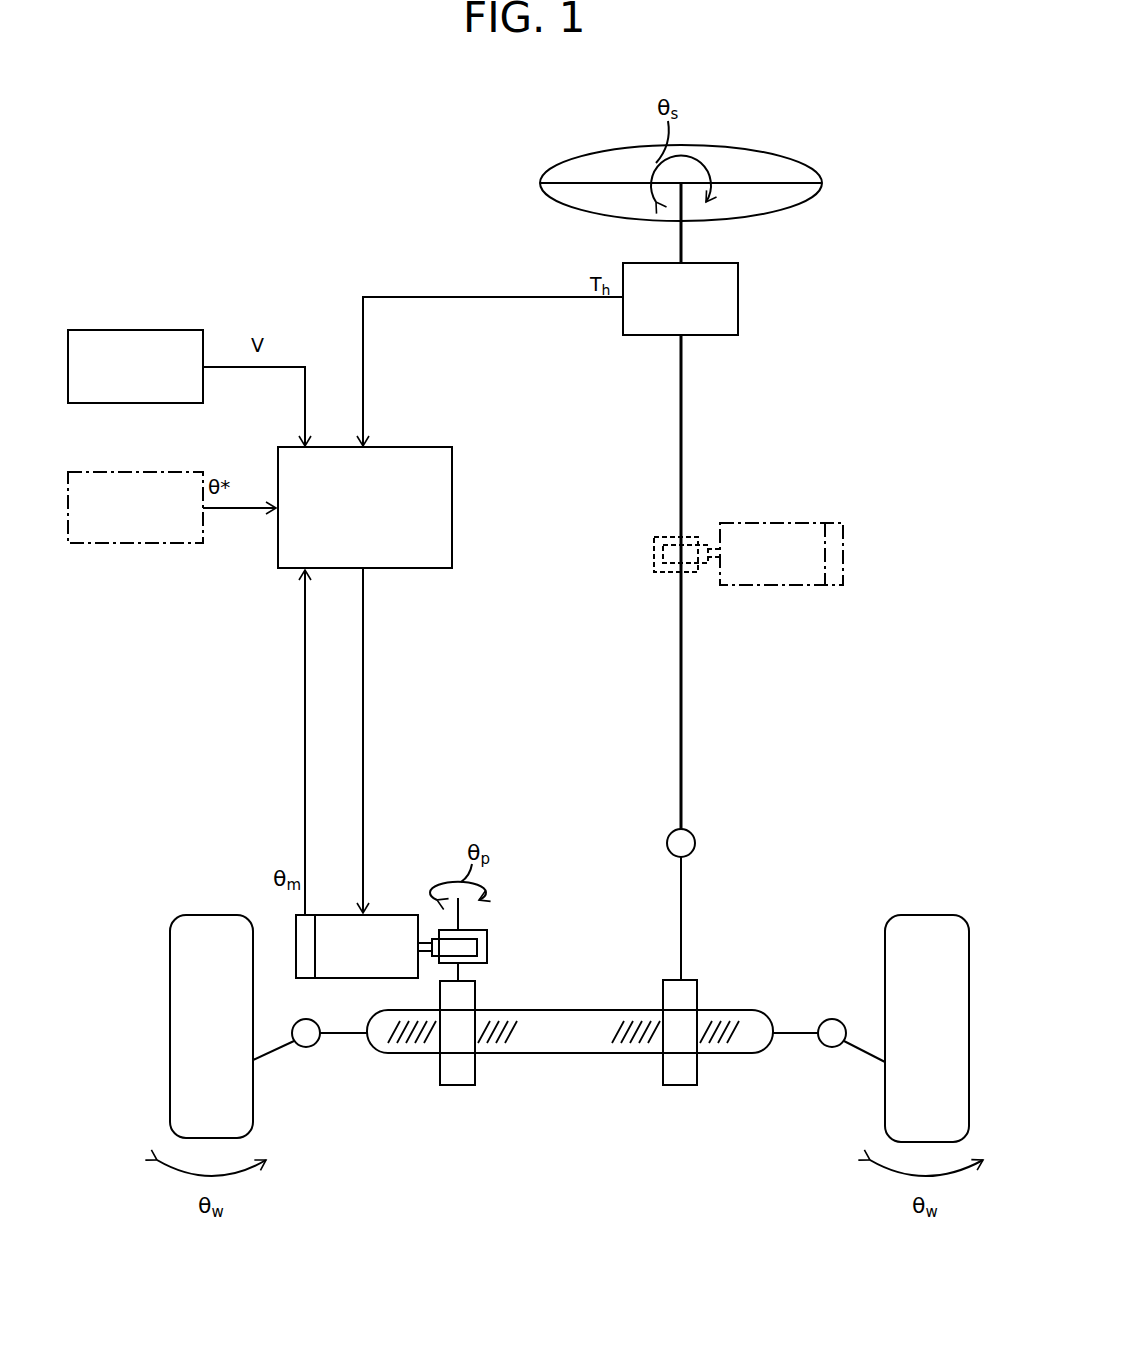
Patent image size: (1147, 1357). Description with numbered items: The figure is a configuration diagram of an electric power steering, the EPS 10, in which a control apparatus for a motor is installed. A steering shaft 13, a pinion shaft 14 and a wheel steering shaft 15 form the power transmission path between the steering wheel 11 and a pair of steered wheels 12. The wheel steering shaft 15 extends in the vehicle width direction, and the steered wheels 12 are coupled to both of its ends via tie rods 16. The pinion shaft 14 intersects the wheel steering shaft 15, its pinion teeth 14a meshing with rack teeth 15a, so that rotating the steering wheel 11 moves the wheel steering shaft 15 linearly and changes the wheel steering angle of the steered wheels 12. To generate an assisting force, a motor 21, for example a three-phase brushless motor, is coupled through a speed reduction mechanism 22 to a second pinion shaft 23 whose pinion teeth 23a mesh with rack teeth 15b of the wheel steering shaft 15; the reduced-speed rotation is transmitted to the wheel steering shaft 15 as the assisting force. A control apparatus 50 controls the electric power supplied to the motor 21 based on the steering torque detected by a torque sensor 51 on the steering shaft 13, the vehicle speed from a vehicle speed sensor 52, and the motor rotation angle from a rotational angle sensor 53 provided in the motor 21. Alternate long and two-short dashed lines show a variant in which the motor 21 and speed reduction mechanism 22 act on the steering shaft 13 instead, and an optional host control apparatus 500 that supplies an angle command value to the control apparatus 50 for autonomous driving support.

The EPS 10 is at (841, 150).
The steering wheel 11 is at (763, 150).
The steered wheels 12 is at (253, 1105).
The steering shaft 13 is at (683, 413).
The pinion shaft 14 is at (680, 947).
The pinion teeth 14a is at (683, 1085).
The wheel steering shaft 15 is at (565, 1055).
The rack teeth 15a is at (636, 1042).
The rack teeth 15b is at (485, 1055).
The tie rods 16 is at (334, 1047).
The motor 21 is at (395, 915).
The speed reduction mechanism 22 is at (492, 959).
The pinion shaft 23 is at (464, 912).
The pinion teeth 23a is at (458, 1085).
The control apparatus 50 is at (430, 447).
The torque sensor 51 is at (738, 297).
The vehicle speed sensor 52 is at (136, 330).
The rotational angle sensor 53 is at (298, 962).
The host control apparatus 500 is at (135, 544).